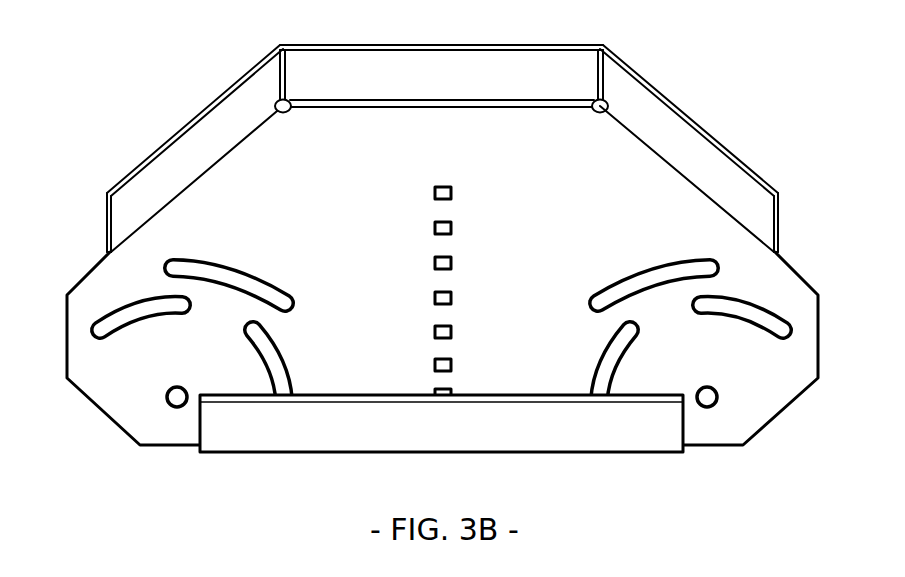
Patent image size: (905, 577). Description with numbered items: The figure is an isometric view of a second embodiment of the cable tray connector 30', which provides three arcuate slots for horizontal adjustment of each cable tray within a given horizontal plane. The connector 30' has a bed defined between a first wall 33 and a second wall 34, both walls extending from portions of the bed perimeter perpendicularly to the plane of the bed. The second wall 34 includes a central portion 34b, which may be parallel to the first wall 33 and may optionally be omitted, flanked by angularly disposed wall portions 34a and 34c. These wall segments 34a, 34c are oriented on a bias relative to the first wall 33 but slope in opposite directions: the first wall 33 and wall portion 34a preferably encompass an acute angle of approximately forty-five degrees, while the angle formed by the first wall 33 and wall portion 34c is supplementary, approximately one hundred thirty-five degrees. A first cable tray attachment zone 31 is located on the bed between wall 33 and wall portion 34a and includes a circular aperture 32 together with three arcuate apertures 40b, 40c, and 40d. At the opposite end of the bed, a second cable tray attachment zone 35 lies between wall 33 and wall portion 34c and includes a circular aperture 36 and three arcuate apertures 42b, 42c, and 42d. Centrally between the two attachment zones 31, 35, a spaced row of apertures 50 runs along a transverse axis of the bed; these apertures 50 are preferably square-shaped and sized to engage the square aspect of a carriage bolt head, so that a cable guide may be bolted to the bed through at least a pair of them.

The cable tray connector 30' is at (445, 247).
The first cable tray attachment zone 31 is at (130, 357).
The circular aperture 32 is at (166, 401).
The first wall 33 is at (396, 432).
The second wall 34 is at (770, 163).
The angularly disposed wall portion 34a is at (192, 136).
The central portion 34b is at (443, 60).
The angularly disposed wall portion 34c is at (699, 137).
The second cable tray attachment zone 35 is at (750, 360).
The circular aperture 36 is at (718, 401).
The arcuate aperture 40b is at (244, 270).
The arcuate aperture 40c is at (124, 307).
The arcuate aperture 40d is at (286, 357).
The arcuate aperture 42b is at (649, 268).
The arcuate aperture 42c is at (751, 304).
The arcuate aperture 42d is at (598, 357).
The apertures 50 is at (462, 197).